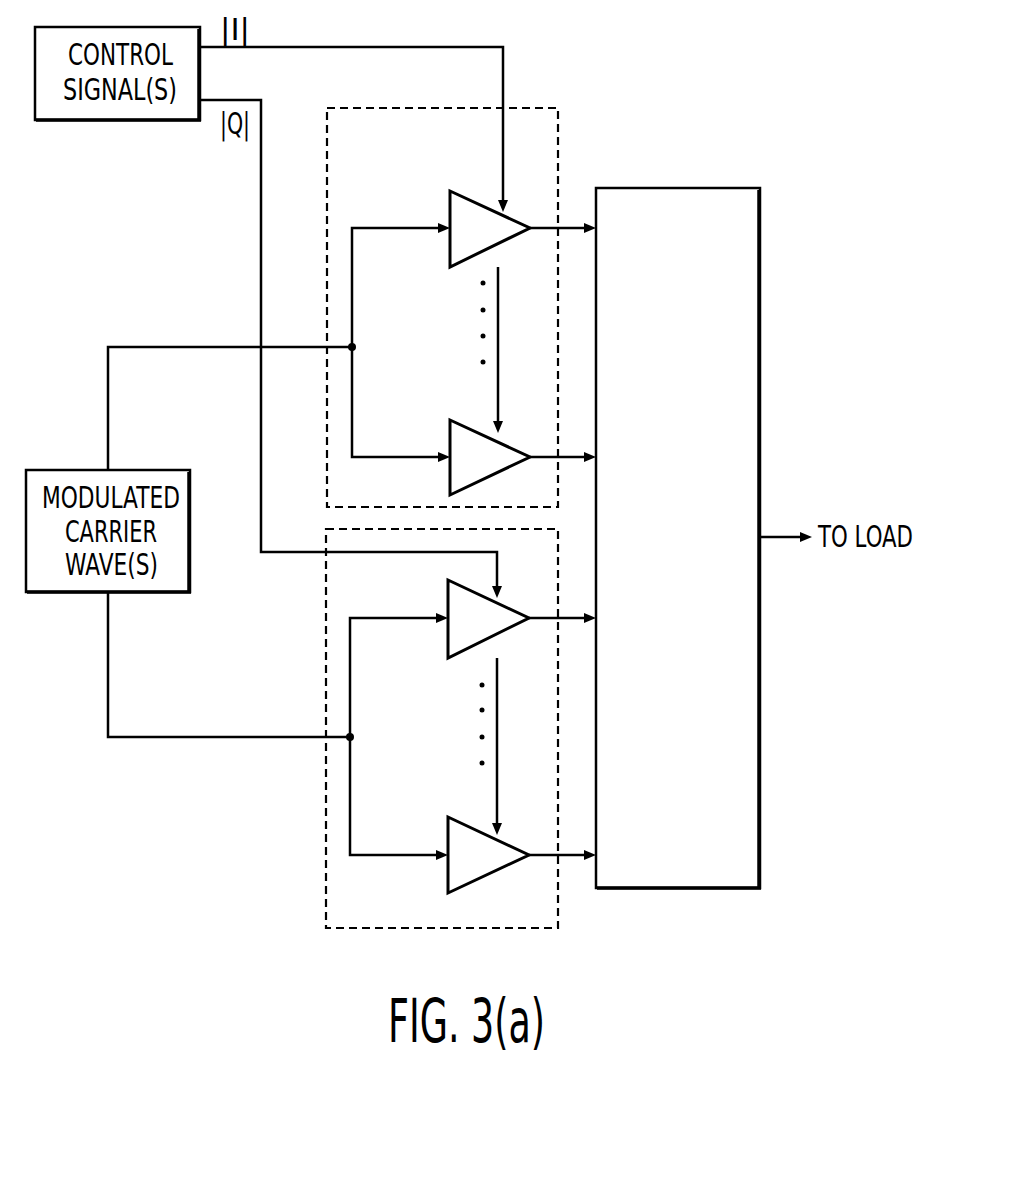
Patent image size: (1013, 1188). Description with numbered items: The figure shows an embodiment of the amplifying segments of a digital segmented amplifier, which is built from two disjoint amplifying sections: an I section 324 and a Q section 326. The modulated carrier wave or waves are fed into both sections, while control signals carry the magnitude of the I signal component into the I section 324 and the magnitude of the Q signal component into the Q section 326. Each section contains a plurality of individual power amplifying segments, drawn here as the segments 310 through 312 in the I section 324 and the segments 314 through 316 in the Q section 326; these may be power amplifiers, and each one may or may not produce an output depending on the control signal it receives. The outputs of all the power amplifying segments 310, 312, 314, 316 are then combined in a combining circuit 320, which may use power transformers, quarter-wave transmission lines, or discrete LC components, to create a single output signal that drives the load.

The power amplifying segment 310 is at (477, 198).
The power amplifying segment 312 is at (470, 424).
The power amplifying segment 314 is at (447, 605).
The power amplifying segment 316 is at (475, 825).
The combining circuit 320 is at (760, 349).
The I amplifying section 324 is at (370, 108).
The Q amplifying section 326 is at (357, 529).